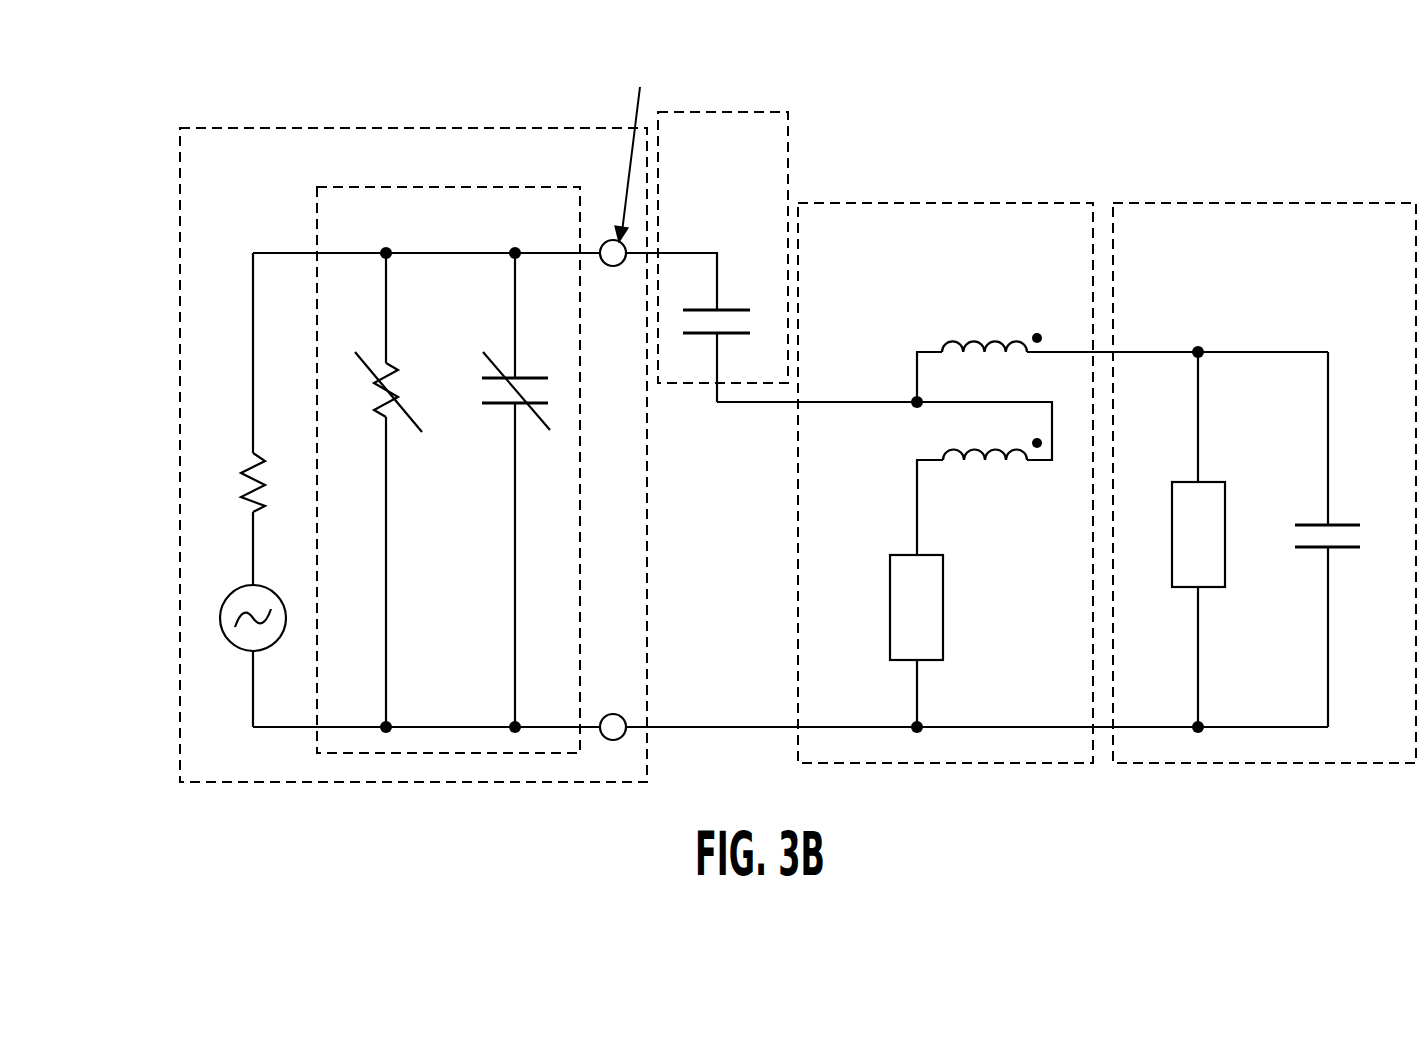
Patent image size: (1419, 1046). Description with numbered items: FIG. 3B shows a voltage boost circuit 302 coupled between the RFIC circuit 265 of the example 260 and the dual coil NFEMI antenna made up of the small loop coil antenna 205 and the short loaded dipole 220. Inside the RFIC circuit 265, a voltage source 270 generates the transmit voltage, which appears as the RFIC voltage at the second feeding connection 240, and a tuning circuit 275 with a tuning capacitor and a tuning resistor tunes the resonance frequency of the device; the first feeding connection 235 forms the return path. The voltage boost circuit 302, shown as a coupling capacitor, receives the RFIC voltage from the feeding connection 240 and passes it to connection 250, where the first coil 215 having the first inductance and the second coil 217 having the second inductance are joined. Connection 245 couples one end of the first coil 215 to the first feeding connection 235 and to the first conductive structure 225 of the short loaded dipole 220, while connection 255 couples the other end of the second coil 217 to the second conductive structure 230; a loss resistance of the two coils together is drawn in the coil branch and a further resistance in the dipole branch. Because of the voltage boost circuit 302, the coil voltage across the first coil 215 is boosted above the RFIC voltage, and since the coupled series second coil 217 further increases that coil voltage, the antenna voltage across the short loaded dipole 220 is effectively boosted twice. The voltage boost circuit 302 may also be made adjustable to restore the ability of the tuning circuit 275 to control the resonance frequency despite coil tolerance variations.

The example 260 is at (147, 99).
The RFIC circuit 265 is at (478, 128).
The tuning circuit 275 is at (317, 208).
The second feeding connection 240 is at (612, 266).
The first feeding connection 235 is at (613, 714).
The voltage source 270 is at (232, 647).
The voltage boost circuit 302 is at (788, 138).
The small loop coil antenna 205 is at (993, 203).
The second coil 217 is at (946, 340).
The first coil 215 is at (1007, 457).
The connection 250 is at (914, 406).
The connection 245 is at (922, 722).
The short loaded dipole 220 is at (1365, 203).
The connection 255 is at (1196, 350).
The second conductive structure 230 is at (1343, 520).
The first conductive structure 225 is at (1340, 550).